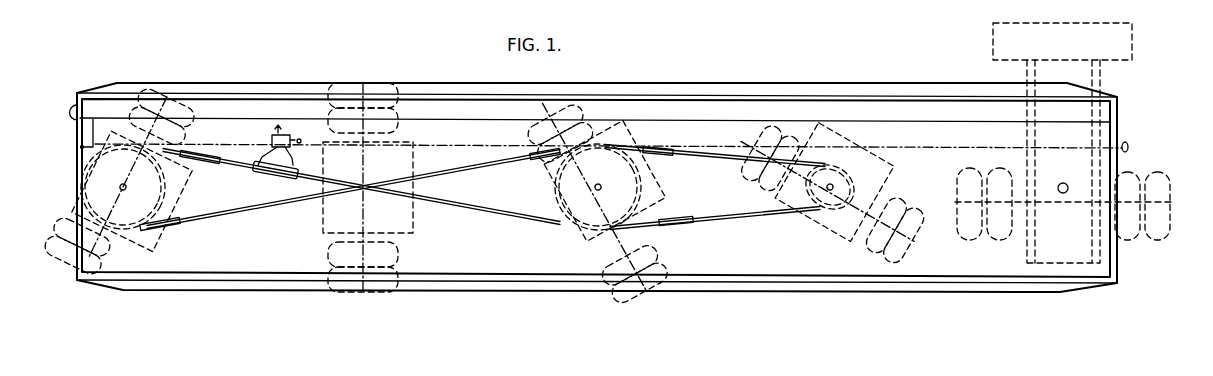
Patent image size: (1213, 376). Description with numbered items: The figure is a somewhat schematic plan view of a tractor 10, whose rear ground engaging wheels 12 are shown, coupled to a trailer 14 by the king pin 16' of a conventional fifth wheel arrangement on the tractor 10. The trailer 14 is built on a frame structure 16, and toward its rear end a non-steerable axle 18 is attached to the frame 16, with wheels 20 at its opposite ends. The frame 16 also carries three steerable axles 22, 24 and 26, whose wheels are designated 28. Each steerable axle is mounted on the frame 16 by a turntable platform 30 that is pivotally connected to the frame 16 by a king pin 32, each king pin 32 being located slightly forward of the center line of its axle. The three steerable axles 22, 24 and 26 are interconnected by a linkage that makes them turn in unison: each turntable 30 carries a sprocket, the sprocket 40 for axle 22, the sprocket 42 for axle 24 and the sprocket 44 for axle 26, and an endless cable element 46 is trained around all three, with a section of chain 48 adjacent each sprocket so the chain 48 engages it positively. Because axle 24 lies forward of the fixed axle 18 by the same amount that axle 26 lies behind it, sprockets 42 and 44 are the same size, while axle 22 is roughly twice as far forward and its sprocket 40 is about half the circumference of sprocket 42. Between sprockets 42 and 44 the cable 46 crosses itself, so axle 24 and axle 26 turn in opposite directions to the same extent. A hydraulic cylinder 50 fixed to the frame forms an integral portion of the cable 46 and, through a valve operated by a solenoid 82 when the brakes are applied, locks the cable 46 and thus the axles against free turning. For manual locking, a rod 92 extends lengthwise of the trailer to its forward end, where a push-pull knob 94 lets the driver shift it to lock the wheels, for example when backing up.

The tractor 10 is at (1141, 52).
The rear ground engaging wheels 12 is at (1168, 193).
The trailer 14 is at (936, 310).
The frame structure 16 is at (595, 220).
The king pin 16' is at (1072, 207).
The non-steerable axle 18 is at (363, 222).
The wheels 20 is at (388, 82).
The steerable axle 22 is at (920, 243).
The steerable axle 24 is at (637, 297).
The steerable axle 26 is at (70, 290).
The wheels 28 is at (165, 92).
The turntable platform 30 is at (896, 170).
The king pin 32 is at (120, 184).
The sprocket 40 is at (845, 184).
The sprocket 42 is at (650, 182).
The sprocket 44 is at (192, 180).
The cable element 46 is at (503, 212).
The section of chain 48 is at (643, 148).
The hydraulic cylinder 50 is at (288, 180).
The solenoid 82 is at (272, 140).
The rod 92 is at (983, 143).
The push-pull knob 94 is at (1130, 147).